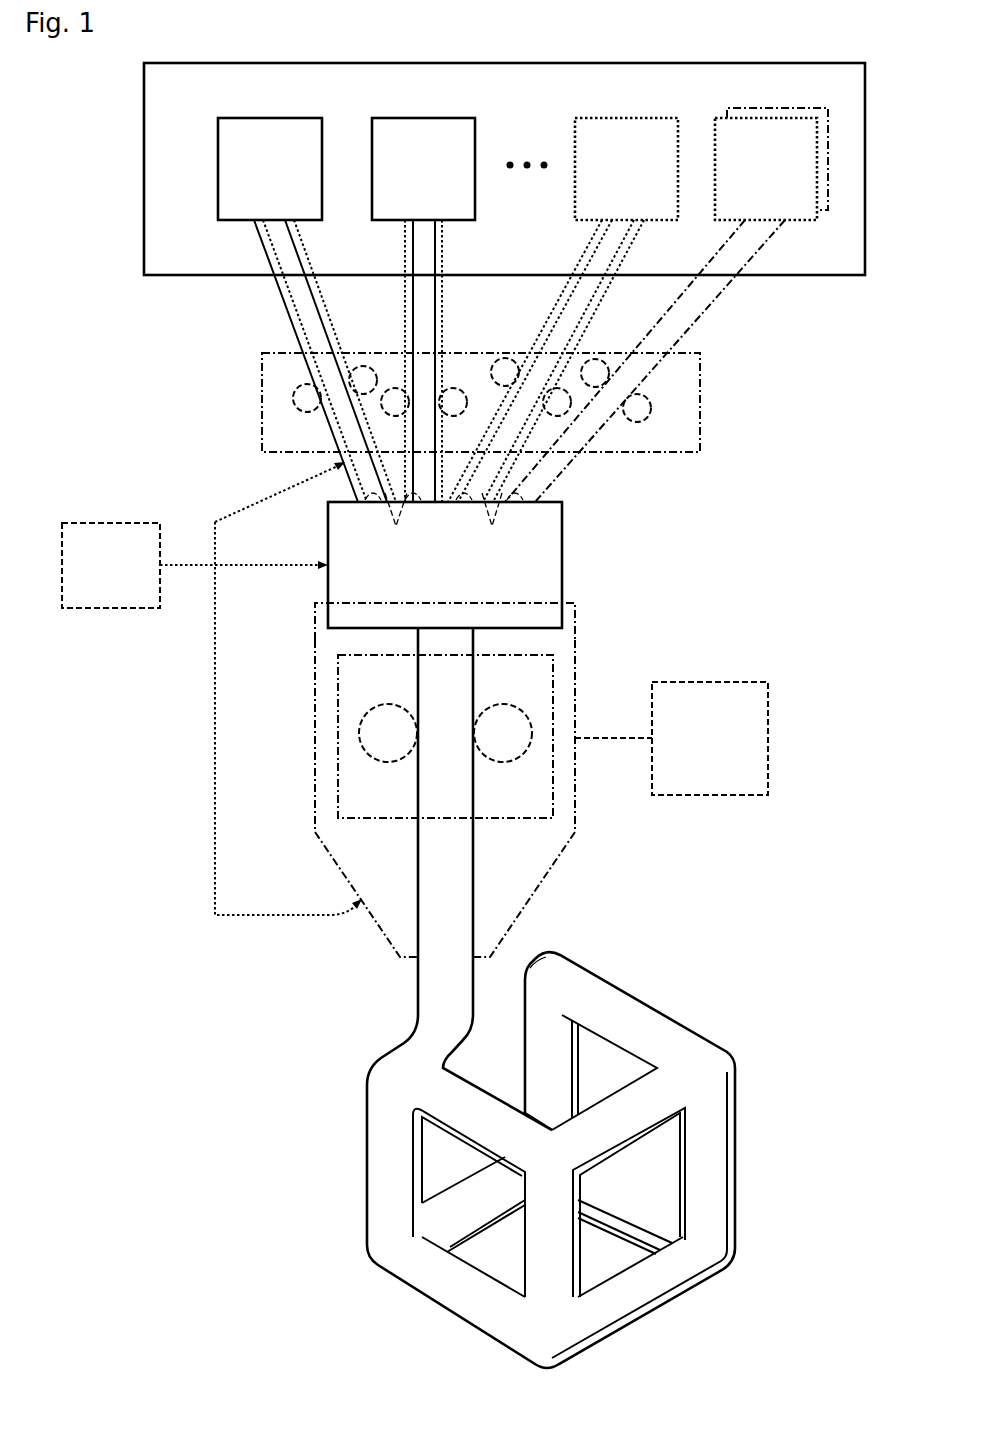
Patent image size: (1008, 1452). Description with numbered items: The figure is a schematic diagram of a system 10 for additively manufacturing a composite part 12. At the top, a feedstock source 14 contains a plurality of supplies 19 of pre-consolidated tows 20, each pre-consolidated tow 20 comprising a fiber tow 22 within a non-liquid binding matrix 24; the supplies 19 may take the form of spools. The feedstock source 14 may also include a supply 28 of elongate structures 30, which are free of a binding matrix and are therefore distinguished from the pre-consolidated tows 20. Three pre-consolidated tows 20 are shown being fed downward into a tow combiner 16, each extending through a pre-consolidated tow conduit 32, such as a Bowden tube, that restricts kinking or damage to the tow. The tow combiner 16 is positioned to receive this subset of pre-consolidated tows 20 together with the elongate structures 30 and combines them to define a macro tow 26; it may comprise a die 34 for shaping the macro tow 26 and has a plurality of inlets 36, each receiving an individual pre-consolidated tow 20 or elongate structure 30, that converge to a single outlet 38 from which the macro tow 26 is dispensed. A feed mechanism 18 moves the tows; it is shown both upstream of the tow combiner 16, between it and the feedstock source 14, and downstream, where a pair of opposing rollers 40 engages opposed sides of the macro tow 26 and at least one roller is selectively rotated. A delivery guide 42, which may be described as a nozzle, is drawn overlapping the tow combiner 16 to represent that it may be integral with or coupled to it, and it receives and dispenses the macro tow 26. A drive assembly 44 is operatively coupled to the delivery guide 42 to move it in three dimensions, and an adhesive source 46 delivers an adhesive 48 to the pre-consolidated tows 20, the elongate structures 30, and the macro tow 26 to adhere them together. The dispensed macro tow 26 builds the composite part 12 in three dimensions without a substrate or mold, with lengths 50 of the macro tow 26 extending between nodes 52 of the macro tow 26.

The system 10 is at (750, 28).
The composite part 12 is at (562, 998).
The feedstock source 14 is at (825, 63).
The tow combiner 16 is at (570, 522).
The feed mechanism 18 is at (701, 398).
The supply 19 is at (284, 118).
The pre-consolidated tow 20 is at (242, 135).
The fiber tow 22 is at (278, 243).
The non-liquid binding matrix 24 is at (423, 270).
The macro tow 26 is at (485, 647).
The supply of elongate structures 28 is at (775, 118).
The elongate structure 30 is at (790, 200).
The pre-consolidated tow conduit 32 is at (290, 326).
The die 34 is at (565, 567).
The inlet 36 is at (441, 526).
The single outlet 38 is at (447, 632).
The opposing rollers 40 is at (500, 360).
The delivery guide 42 is at (545, 880).
The drive assembly 44 is at (718, 682).
The adhesive source 46 is at (124, 610).
The adhesive 48 is at (123, 543).
The lengths of macro tow 50 is at (607, 1087).
The nodes 52 is at (550, 1160).